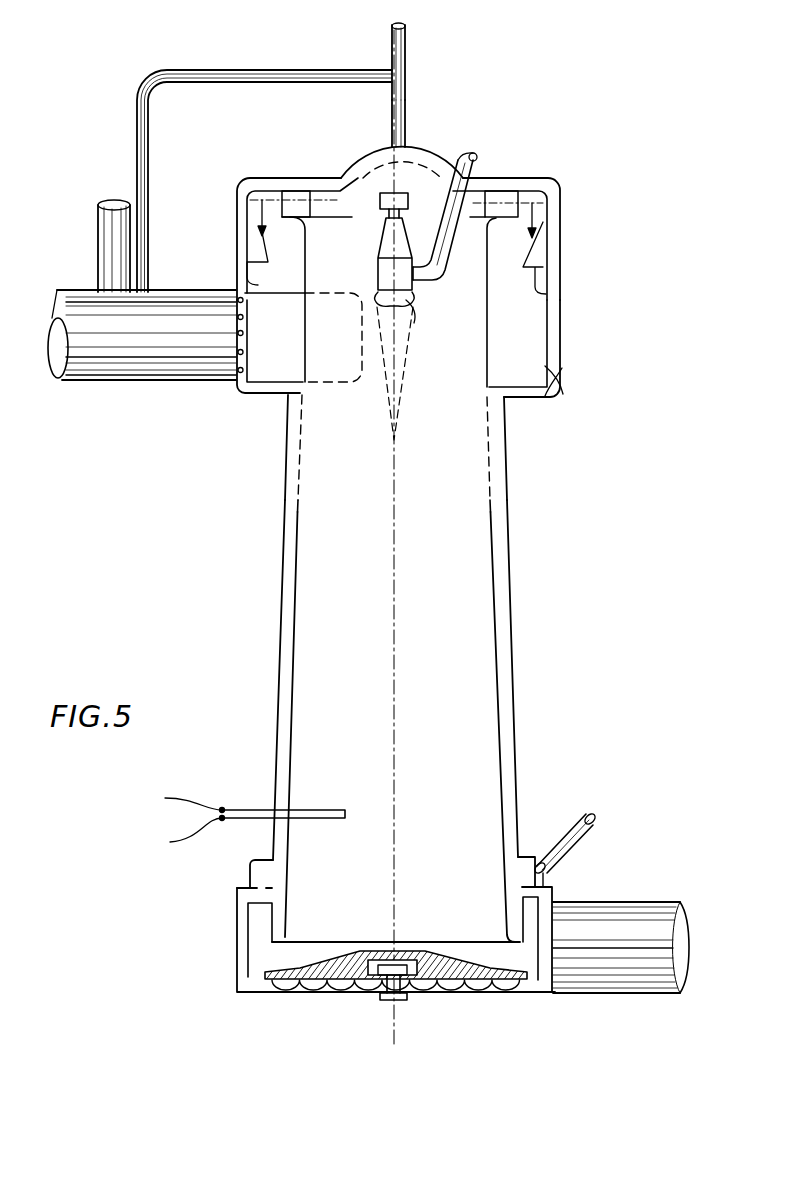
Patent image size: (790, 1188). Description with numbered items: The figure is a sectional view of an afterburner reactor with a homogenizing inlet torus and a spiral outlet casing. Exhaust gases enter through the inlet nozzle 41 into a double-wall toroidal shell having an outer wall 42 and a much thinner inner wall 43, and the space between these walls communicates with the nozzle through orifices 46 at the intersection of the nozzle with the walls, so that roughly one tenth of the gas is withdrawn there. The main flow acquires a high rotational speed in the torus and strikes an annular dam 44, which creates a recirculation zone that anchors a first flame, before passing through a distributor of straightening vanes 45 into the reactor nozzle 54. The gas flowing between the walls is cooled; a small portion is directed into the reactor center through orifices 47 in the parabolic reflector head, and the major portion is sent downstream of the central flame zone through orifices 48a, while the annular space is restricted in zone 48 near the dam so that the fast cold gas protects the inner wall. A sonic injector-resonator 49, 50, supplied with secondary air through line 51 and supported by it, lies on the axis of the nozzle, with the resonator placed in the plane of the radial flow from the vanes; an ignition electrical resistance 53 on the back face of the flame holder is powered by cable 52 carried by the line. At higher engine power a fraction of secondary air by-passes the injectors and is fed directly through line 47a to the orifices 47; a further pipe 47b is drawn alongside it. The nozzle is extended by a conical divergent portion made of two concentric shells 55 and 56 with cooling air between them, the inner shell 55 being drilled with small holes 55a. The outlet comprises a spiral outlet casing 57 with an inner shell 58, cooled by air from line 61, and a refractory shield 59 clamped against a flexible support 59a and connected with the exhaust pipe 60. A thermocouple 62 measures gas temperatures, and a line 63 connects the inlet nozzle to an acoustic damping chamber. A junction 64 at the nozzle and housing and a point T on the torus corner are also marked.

The inlet nozzle 41 is at (122, 383).
The outer wall 42 is at (248, 397).
The inner wall 43 is at (275, 395).
The annular dam 44 is at (250, 276).
The straightening vanes 45 is at (292, 184).
The orifices 46 is at (237, 308).
The orifices 47 is at (381, 160).
The line 47a is at (408, 60).
The horizontal feed pipe 47b is at (148, 202).
The zone 48 is at (229, 222).
The orifices 48a is at (293, 415).
The sonic injector 49 is at (386, 240).
The resonator 50 is at (382, 196).
The line 51 is at (458, 165).
The cable 52 is at (478, 162).
The ignition electrical resistance 53 is at (414, 323).
The reactor nozzle 54 is at (305, 335).
The inner shell 55 is at (293, 661).
The small holes 55a is at (297, 500).
The outer shell 56 is at (284, 567).
The spiral outlet casing 57 is at (237, 925).
The inner shell 58 is at (252, 958).
The refractory shield 59 is at (350, 985).
The flexible support 59a is at (446, 985).
The exhaust pipe 60 is at (637, 903).
The line 61 is at (570, 830).
The thermocouple 62 is at (258, 808).
The line 63 is at (92, 213).
The pipe junction 64 is at (225, 385).
The housing corner T is at (550, 386).